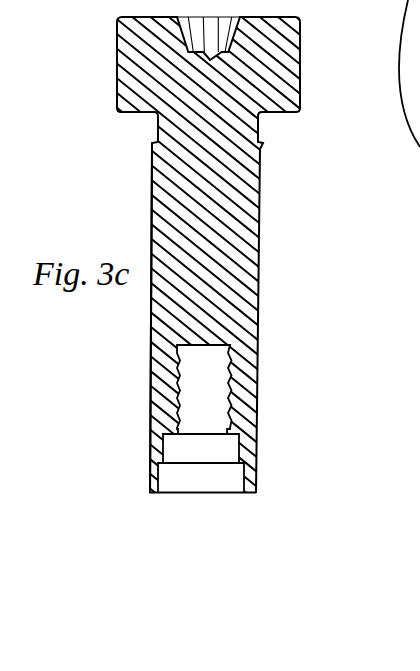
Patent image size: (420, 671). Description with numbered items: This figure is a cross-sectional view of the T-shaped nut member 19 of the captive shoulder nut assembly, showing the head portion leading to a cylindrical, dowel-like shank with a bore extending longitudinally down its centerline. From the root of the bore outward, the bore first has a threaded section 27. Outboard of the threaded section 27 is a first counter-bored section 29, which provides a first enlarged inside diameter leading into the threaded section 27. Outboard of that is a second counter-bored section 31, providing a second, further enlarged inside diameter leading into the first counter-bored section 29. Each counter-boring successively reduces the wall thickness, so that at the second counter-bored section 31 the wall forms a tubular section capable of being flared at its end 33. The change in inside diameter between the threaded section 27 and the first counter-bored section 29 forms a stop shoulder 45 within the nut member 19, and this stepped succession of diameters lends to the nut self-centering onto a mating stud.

The nut member 19 is at (310, 278).
The threaded section 27 is at (240, 381).
The first counter-bored section 29 is at (238, 443).
The second counter-bored section 31 is at (245, 483).
The end 33 is at (153, 500).
The stop shoulder 45 is at (152, 422).